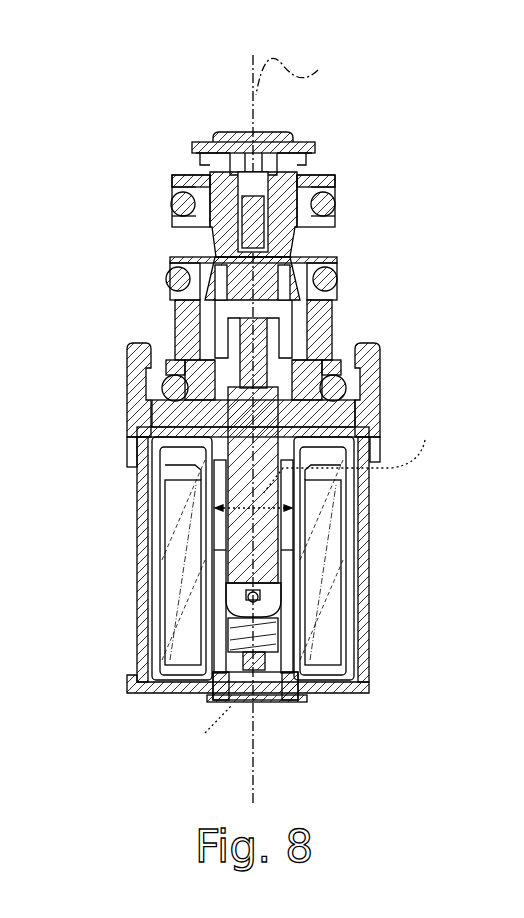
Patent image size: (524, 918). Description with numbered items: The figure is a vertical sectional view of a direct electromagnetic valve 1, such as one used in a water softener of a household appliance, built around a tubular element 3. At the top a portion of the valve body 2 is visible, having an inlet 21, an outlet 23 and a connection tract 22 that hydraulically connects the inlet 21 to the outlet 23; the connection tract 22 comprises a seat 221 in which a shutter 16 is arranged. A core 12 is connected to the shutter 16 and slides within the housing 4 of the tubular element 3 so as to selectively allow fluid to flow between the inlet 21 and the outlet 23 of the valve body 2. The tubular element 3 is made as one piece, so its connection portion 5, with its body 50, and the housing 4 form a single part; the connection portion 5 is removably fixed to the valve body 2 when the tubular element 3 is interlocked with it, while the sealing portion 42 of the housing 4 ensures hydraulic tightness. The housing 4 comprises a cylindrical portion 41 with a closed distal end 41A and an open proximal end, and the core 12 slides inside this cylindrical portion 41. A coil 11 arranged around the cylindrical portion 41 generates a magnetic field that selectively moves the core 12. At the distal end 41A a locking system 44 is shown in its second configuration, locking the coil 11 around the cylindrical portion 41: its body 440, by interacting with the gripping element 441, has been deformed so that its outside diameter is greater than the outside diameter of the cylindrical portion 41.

The electromagnetic valve 1 is at (50, 150).
The shutter 16 is at (208, 143).
The seat 221 is at (197, 167).
The inlet 21 is at (324, 157).
The connection tract 22 is at (306, 242).
The valve body 2 is at (330, 299).
The outlet 23 is at (140, 243).
The tubular element 3 is at (462, 367).
The sealing portion 42 is at (342, 357).
The connection portion 5 is at (115, 385).
The body 50 is at (153, 430).
The core 12 is at (262, 440).
The coil 11 is at (333, 522).
The housing 4 is at (316, 565).
The cylindrical portion 41 is at (210, 567).
The closed distal end 41A is at (303, 648).
The locking system 44 is at (240, 733).
The gripping element 441 is at (263, 703).
The body 440 is at (283, 707).